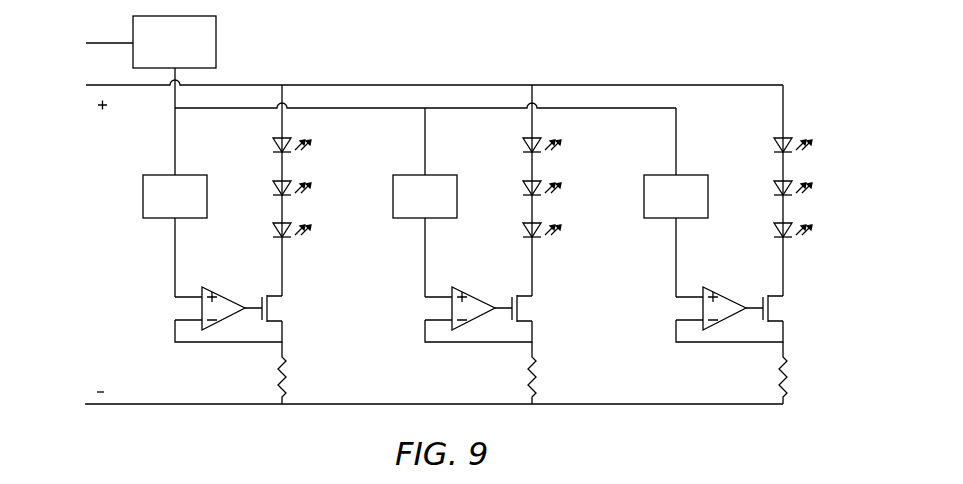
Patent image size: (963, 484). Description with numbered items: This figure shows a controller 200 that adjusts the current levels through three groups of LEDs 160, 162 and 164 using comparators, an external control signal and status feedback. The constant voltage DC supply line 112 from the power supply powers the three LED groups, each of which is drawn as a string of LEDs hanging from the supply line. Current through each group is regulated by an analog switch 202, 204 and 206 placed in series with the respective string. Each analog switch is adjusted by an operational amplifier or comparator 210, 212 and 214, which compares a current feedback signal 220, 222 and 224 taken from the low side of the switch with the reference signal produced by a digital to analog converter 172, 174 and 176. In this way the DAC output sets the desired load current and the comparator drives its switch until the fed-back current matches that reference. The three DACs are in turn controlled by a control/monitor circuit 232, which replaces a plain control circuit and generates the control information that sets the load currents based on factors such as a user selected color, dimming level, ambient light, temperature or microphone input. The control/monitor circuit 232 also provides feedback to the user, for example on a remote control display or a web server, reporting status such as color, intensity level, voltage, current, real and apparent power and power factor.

The constant voltage DC supply line 112 is at (96, 85).
The controller 200 is at (653, 68).
The control/monitor circuit 232 is at (216, 57).
The digital to analog converter 172 is at (198, 175).
The digital to analog converter 174 is at (448, 175).
The digital to analog converter 176 is at (699, 175).
The group of LEDs 160 is at (325, 156).
The group of LEDs 162 is at (575, 156).
The group of LEDs 164 is at (826, 156).
The comparator 210 is at (235, 283).
The comparator 212 is at (485, 283).
The comparator 214 is at (736, 283).
The analog switch 202 is at (275, 320).
The analog switch 204 is at (525, 320).
The analog switch 206 is at (776, 320).
The current feedback signal 220 is at (188, 343).
The current feedback signal 222 is at (438, 343).
The current feedback signal 224 is at (689, 343).